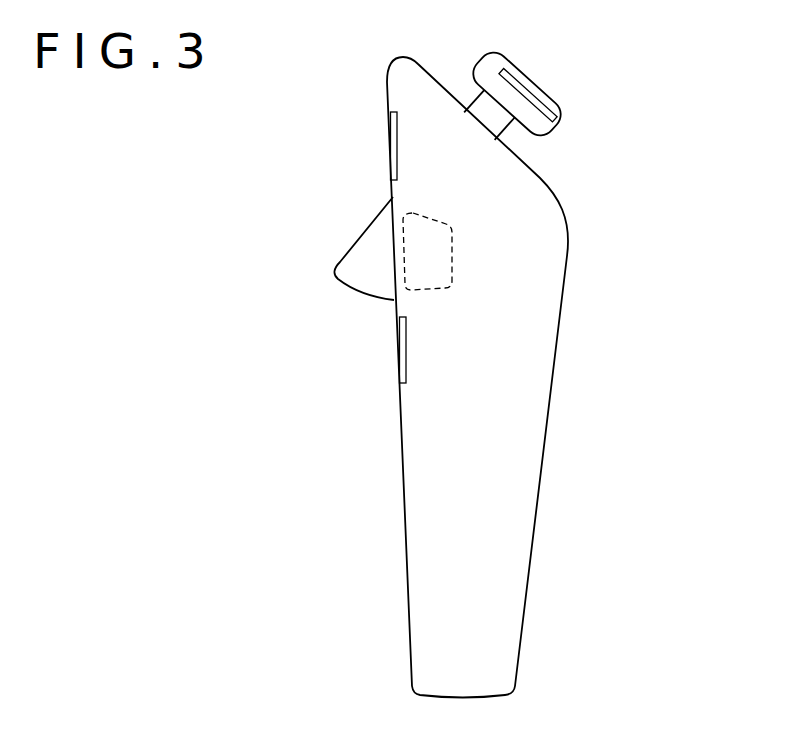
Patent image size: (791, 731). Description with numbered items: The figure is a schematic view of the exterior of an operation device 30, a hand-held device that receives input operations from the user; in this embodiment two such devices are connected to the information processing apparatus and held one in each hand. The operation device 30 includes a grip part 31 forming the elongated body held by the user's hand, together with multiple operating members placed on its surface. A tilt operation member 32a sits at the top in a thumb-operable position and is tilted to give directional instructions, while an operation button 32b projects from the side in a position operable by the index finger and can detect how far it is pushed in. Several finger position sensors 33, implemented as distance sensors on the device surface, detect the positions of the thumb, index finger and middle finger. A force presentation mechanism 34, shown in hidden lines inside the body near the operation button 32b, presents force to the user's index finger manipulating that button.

The operation device 30 is at (559, 377).
The grip part 31 is at (500, 580).
The tilt operation member 32a is at (567, 132).
The operation button 32b is at (360, 238).
The finger position sensors 33 is at (390, 146).
The force presentation mechanism 34 is at (453, 273).